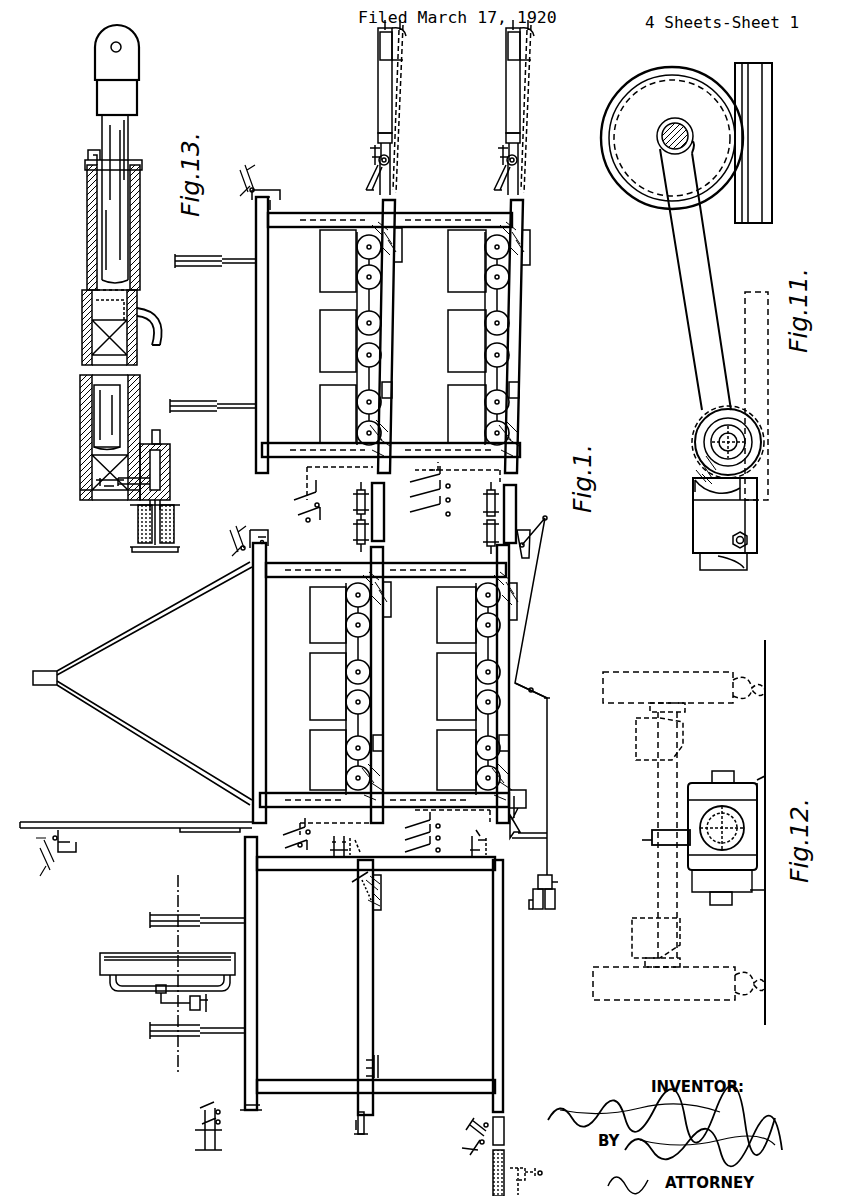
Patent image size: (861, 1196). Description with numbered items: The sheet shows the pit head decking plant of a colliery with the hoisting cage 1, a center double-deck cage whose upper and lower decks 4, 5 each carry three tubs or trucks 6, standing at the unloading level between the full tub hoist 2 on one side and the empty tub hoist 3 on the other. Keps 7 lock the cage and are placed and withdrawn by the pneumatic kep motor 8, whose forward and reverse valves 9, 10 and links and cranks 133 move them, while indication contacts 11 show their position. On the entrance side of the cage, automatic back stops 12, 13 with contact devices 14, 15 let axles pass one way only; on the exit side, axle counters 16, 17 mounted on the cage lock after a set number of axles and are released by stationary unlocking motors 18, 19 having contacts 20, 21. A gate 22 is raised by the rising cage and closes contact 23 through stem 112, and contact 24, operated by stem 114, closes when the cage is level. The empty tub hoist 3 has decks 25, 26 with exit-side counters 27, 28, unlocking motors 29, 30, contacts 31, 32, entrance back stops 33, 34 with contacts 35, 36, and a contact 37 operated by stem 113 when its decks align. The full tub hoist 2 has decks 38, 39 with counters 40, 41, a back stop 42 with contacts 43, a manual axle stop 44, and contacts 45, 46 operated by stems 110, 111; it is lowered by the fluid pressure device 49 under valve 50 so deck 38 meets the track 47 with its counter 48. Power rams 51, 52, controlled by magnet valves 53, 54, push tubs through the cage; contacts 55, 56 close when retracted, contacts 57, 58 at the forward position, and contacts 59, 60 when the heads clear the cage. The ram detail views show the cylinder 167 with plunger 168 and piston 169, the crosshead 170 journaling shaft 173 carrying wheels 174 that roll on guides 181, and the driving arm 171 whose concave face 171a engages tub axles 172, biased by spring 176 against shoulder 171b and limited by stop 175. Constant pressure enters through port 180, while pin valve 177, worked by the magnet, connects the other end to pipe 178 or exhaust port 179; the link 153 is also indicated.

In FIG. 1, the hoisting cage 1 is at (381, 683).
In FIG. 1, the full tub hoist 2 is at (370, 973).
In FIG. 1, the empty tub hoist 3 is at (388, 335).
In FIG. 1, the upper deck 4 is at (380, 672).
In FIG. 1, the lower deck 5 is at (509, 712).
In FIG. 1, the tubs or trucks 6 is at (310, 612).
In FIG. 1, the keps 7 is at (536, 558).
In FIG. 1, the kep motor 8 is at (553, 889).
In FIG. 1, the forward actuating valve 9 is at (550, 910).
In FIG. 1, the reverse actuating valve 10 is at (531, 905).
In FIG. 1, the indication contacts 11 is at (528, 803).
In FIG. 1, the automatic back stop 12 is at (366, 562).
In FIG. 1, the automatic back stop 13 is at (495, 560).
In FIG. 1, the indication contact device 14 is at (390, 600).
In FIG. 1, the indication contact device 15 is at (520, 605).
In FIG. 1, the axle counter or stop 16 is at (384, 780).
In FIG. 1, the axle counter or stop 17 is at (510, 782).
In FIG. 1, the unlocking motor mechanism 18 is at (384, 745).
In FIG. 1, the unlocking motor mechanism 19 is at (509, 745).
In FIG. 1, the indication contacts 20 is at (282, 832).
In FIG. 1, the indication contacts 21 is at (404, 832).
In FIG. 1, the gate 22 is at (90, 822).
In FIG. 1, the indication contact device 23 is at (52, 858).
In FIG. 1, the indication contact device 24 is at (230, 532).
In FIG. 1, the deck 25 is at (388, 340).
In FIG. 1, the deck 26 is at (520, 318).
In FIG. 1, the axle counter or stop 27 is at (393, 436).
In FIG. 1, the axle counter or stop 28 is at (520, 440).
In FIG. 1, the unlocking motor 29 is at (393, 392).
In FIG. 1, the unlocking motor 30 is at (520, 392).
In FIG. 1, the indication contacts 31 is at (300, 490).
In FIG. 1, the indication contacts 32 is at (437, 489).
In FIG. 1, the automatic back stop 33 is at (378, 226).
In FIG. 1, the automatic back stop 34 is at (510, 226).
In FIG. 1, the indication contact 35 is at (404, 255).
In FIG. 1, the indication contact 36 is at (531, 255).
In FIG. 1, the indication contact 37 is at (246, 178).
In FIG. 1, the upper deck 38 is at (374, 984).
In FIG. 1, the lower deck 39 is at (503, 1038).
In FIG. 1, the axle counter 40 is at (332, 850).
In FIG. 1, the axle counter 41 is at (471, 850).
In FIG. 1, the automatic back stop 42 is at (360, 882).
In FIG. 1, the indication contacts 43 is at (384, 896).
In FIG. 1, the manually operable axle stop 44 is at (362, 1068).
In FIG. 1, the indication contact 45 is at (202, 1125).
In FIG. 1, the indication contact 46 is at (470, 1140).
In FIG. 1, the track 47 is at (505, 1130).
In FIG. 1, the axle counter 48 is at (530, 1170).
In FIG. 1, the lowering mechanism 49 is at (134, 953).
In FIG. 1, the electro-magnetically operated valve 50 is at (209, 1003).
In FIG. 13, the power-actuated ram 51 is at (92, 276).
In FIG. 1, the power-actuated ram 51 is at (378, 106).
In FIG. 1, the power-actuated ram 52 is at (506, 108).
In FIG. 13, the electro-magnetically actuated valve 53 is at (138, 532).
In FIG. 1, the electro-magnetically actuated valve 53 is at (380, 32).
In FIG. 1, the electro-magnetically actuated valve 54 is at (508, 32).
In FIG. 1, the indication contact 55 is at (372, 152).
In FIG. 1, the indication contact 56 is at (500, 154).
In FIG. 1, the indication contact 57 is at (350, 535).
In FIG. 1, the indication contact 58 is at (479, 537).
In FIG. 1, the indication contact 59 is at (350, 501).
In FIG. 1, the indication contact 60 is at (481, 501).
In FIG. 1, the stem 110 is at (246, 1110).
In FIG. 1, the stem 111 is at (358, 1128).
In FIG. 1, the stem 112 is at (72, 846).
In FIG. 1, the stem 113 is at (275, 196).
In FIG. 1, the stem 114 is at (266, 546).
In FIG. 1, the kep operating links and cranks 133 is at (538, 652).
In FIG. 1, the link 153 is at (549, 770).
In FIG. 13, the cylinder 167 is at (84, 316).
In FIG. 13, the plunger 168 is at (98, 205).
In FIG. 13, the piston 169 is at (90, 465).
In FIG. 13, the crosshead 170 is at (100, 66).
In FIG. 11, the driving arm 171 is at (684, 305).
In FIG. 12, the driving arm 171 is at (652, 845).
In FIG. 11, the concave face 171a is at (693, 142).
In FIG. 11, the shoulder 171b is at (760, 488).
In FIG. 11, the tub axles 172 is at (662, 130).
In FIG. 12, the tub axles 172 is at (652, 828).
In FIG. 11, the shaft 173 is at (720, 438).
In FIG. 12, the shaft 173 is at (721, 906).
In FIG. 11, the wheels 174 is at (692, 445).
In FIG. 12, the wheels 174 is at (704, 781).
In FIG. 11, the stop 175 is at (698, 466).
In FIG. 11, the spring 176 is at (712, 492).
In FIG. 13, the pin valve 177 is at (165, 487).
In FIG. 13, the pipe 178 is at (165, 455).
In FIG. 13, the port 179 is at (175, 512).
In FIG. 13, the port 180 is at (166, 325).
In FIG. 11, the guides 181 is at (770, 405).
In FIG. 12, the guides 181 is at (756, 775).